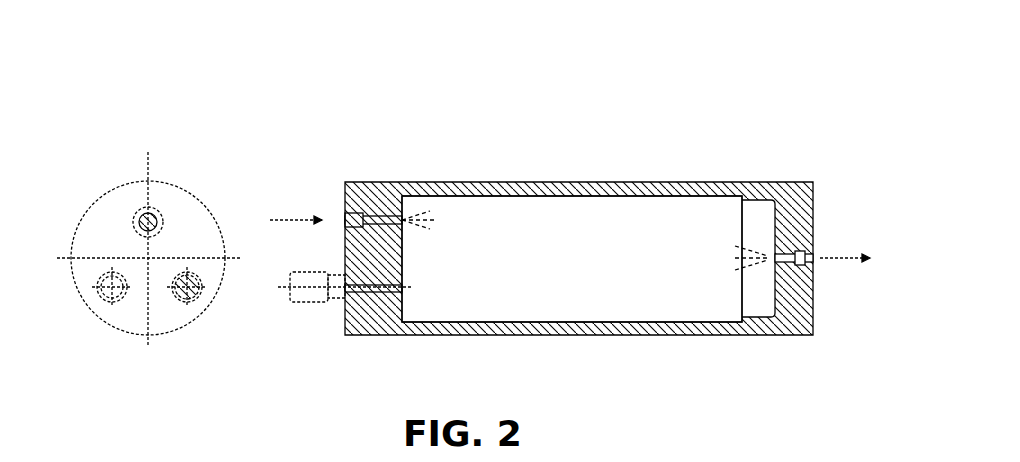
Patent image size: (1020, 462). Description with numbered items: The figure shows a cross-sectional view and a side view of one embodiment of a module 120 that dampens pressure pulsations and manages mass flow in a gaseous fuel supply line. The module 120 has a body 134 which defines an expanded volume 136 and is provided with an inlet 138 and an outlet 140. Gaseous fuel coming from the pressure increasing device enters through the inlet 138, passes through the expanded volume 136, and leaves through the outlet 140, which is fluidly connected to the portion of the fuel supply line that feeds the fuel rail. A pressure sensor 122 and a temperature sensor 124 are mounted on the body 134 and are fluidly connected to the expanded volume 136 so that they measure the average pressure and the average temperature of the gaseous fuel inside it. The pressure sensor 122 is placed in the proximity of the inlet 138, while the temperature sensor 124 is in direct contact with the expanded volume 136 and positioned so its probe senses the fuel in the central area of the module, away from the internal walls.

The module 120 is at (612, 194).
The pressure sensor 122 is at (102, 300).
The temperature sensor 124 is at (188, 300).
The body 134 is at (733, 183).
The expanded volume 136 is at (572, 235).
The inlet 138 is at (162, 212).
The outlet 140 is at (805, 250).